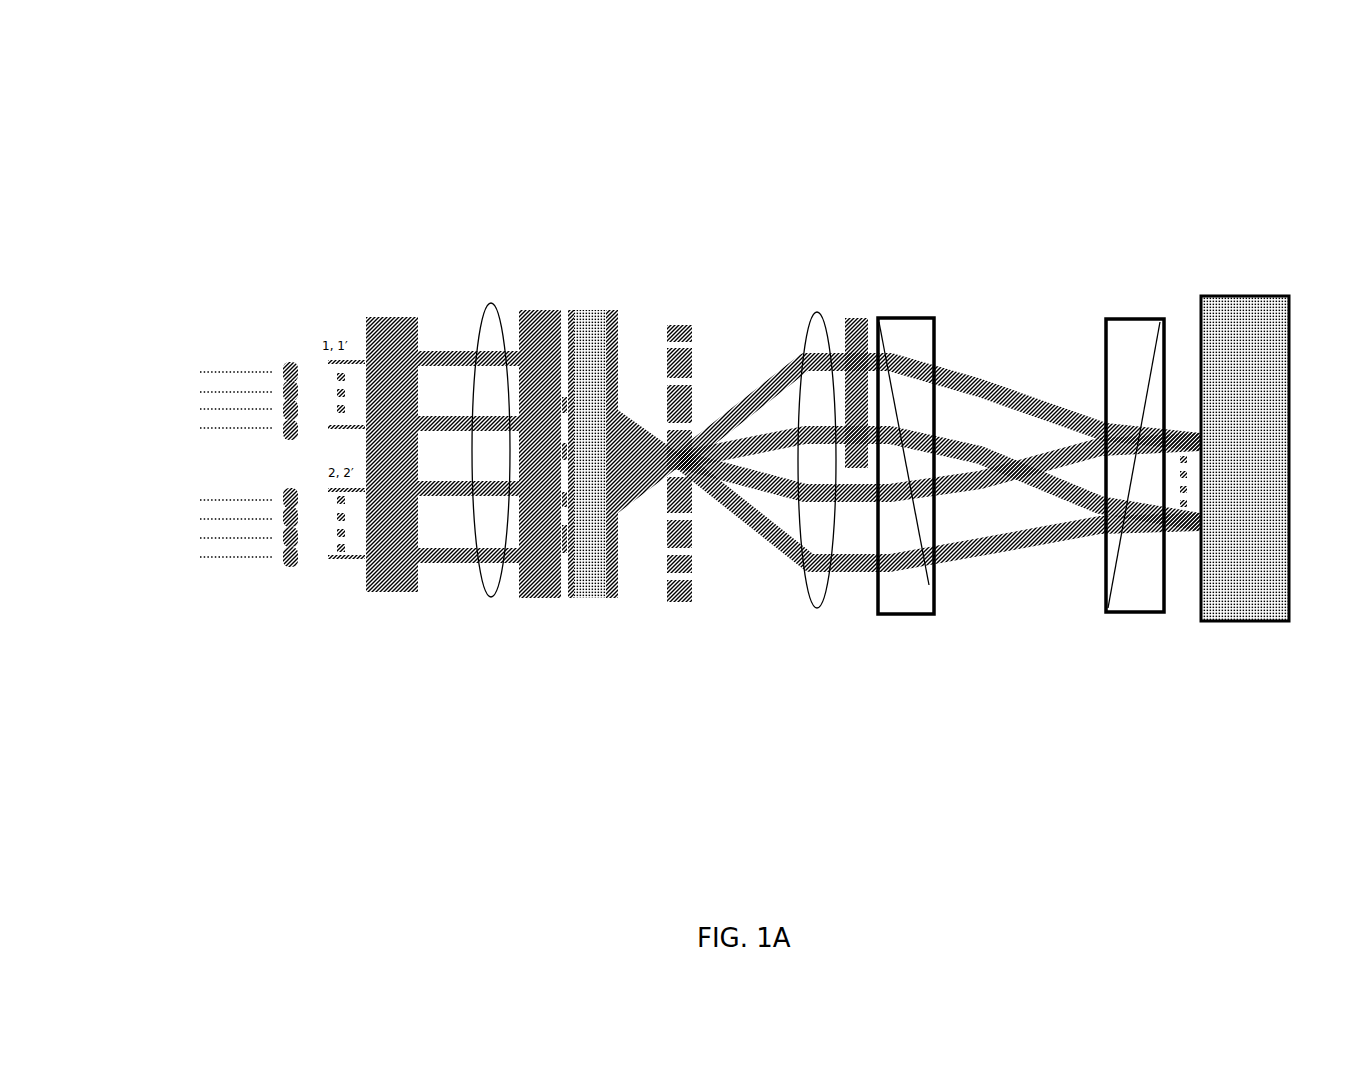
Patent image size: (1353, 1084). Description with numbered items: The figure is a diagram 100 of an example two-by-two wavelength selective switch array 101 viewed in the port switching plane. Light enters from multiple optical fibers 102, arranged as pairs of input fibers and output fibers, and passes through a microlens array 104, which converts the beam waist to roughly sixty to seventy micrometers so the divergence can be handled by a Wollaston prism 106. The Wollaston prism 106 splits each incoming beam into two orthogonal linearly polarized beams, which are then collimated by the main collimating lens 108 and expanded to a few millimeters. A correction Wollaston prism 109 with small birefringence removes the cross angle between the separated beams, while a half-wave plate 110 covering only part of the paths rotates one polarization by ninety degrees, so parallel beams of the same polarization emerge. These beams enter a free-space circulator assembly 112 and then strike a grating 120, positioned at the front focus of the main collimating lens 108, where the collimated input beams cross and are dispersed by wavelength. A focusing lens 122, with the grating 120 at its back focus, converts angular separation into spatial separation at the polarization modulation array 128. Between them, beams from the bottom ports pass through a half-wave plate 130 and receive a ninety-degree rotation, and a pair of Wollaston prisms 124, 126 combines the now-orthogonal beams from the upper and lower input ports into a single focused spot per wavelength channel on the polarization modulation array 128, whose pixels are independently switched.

The diagram 100 is at (175, 128).
The 2×2 wavelength selective switch array 101 is at (175, 227).
The optical fibers 102 is at (187, 437).
The microlens array 104 is at (291, 330).
The Wollaston prism 106 is at (383, 313).
The main collimating lens 108 is at (487, 293).
The correction Wollaston prism 109 is at (548, 377).
The half-wave plate 110 is at (540, 293).
The free-space circulator assembly 112 is at (593, 293).
The grating 120 is at (688, 312).
The focusing lens 122 is at (815, 305).
The Wollaston prism 124 is at (918, 313).
The Wollaston prism 126 is at (1125, 310).
The polarization modulation array 128 is at (1245, 288).
The half-wave plate 130 is at (850, 312).